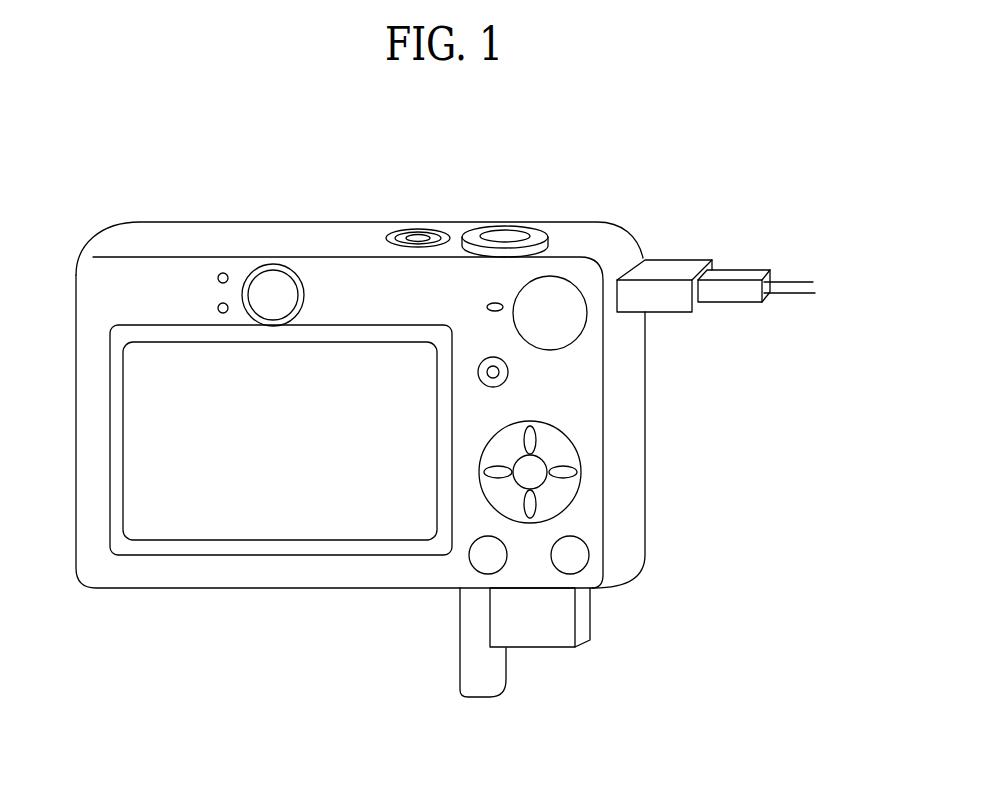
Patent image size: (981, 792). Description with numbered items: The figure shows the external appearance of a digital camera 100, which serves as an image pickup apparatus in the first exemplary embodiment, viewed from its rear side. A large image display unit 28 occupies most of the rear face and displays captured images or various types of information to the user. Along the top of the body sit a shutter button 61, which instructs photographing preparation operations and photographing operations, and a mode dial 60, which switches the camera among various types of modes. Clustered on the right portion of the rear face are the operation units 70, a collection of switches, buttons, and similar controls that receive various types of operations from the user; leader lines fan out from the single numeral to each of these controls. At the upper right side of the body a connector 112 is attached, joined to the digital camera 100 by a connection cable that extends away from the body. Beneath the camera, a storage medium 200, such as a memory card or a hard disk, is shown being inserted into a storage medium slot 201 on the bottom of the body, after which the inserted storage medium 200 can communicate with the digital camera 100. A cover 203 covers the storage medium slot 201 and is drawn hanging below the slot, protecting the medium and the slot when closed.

The digital camera 100 is at (240, 600).
The image display unit 28 is at (322, 357).
The shutter button 61 is at (505, 235).
The mode dial 60 is at (560, 288).
The connector 112 is at (637, 262).
The operation units 70 is at (440, 243).
The storage medium 200 is at (538, 637).
The storage medium slot 201 is at (533, 591).
The cover 203 is at (478, 687).